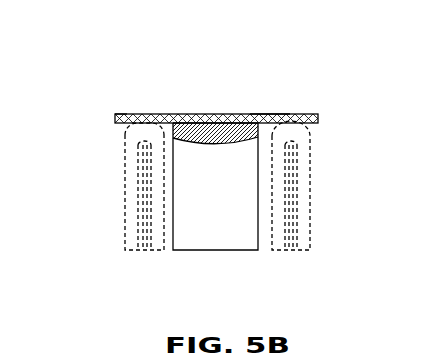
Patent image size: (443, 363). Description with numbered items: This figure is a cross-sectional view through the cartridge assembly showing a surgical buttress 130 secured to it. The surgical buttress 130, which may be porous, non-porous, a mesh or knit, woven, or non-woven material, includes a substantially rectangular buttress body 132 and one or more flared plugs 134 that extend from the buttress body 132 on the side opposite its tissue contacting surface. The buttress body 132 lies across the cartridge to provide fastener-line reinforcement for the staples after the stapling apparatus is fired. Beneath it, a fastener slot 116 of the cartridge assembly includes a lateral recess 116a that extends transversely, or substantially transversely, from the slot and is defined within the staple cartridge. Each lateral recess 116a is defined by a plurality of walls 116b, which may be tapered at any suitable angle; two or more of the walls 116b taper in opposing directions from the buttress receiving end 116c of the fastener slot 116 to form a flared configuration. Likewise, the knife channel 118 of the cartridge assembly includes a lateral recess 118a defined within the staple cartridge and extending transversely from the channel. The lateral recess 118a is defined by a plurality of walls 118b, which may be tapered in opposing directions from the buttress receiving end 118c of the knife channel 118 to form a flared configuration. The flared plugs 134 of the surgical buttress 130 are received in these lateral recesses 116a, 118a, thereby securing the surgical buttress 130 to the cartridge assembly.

The surgical buttress 130 is at (125, 101).
The buttress body 132 is at (172, 113).
The fastener slot 116 is at (134, 227).
The lateral recess 116a is at (134, 155).
The walls 116b is at (160, 136).
The buttress receiving end 116c is at (117, 114).
The flared plug 134 is at (125, 181).
The knife channel 118 is at (193, 240).
The lateral recess 118a is at (258, 114).
The walls 118b is at (206, 115).
The buttress receiving end 118c is at (233, 122).